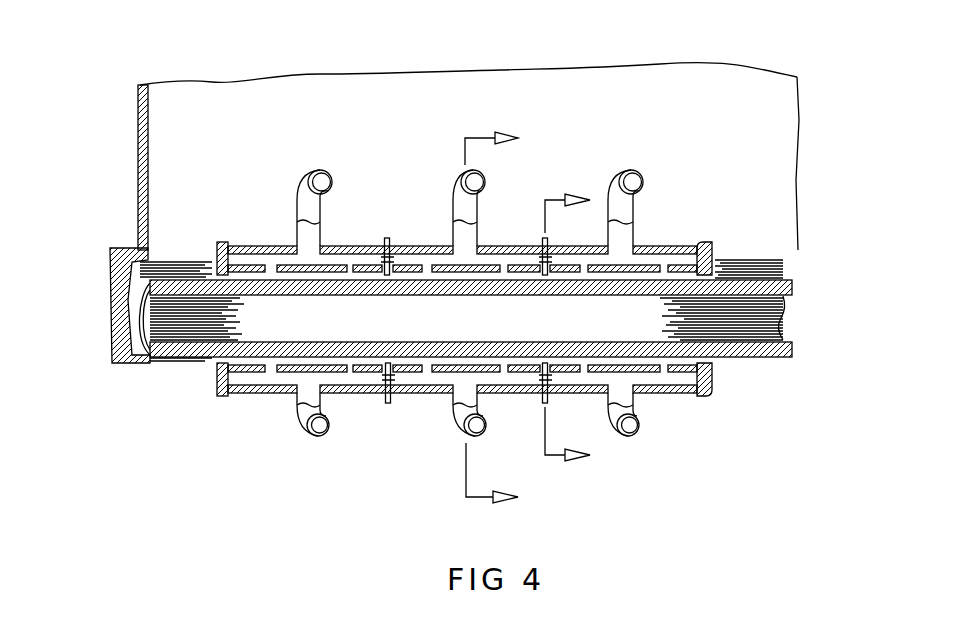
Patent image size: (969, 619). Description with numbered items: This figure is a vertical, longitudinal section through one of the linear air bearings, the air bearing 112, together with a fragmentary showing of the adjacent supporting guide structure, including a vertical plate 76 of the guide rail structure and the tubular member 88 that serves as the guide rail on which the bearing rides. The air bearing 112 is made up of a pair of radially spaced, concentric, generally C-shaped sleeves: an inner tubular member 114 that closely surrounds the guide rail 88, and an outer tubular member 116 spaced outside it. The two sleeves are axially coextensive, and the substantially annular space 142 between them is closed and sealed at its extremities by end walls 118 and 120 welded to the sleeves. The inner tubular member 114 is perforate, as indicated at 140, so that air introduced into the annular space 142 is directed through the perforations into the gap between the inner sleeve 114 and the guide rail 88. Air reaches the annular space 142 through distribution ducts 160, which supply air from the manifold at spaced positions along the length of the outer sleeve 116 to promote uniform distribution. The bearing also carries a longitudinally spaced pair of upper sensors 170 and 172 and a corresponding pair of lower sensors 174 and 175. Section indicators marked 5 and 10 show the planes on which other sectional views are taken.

The vertical plate 76 is at (212, 82).
The tubular member 88 is at (742, 358).
The linear air bearing 112 is at (501, 202).
The inner tubular member 114 is at (680, 268).
The outer tubular member 116 is at (647, 256).
The end wall 118 is at (212, 258).
The end wall 120 is at (707, 243).
The perforations 140 is at (350, 367).
The annular space 142 is at (413, 253).
The distribution duct 160 is at (318, 172).
The upper sensor 170 is at (385, 238).
The upper sensor 172 is at (540, 238).
The lower sensor 174 is at (388, 402).
The lower sensor 175 is at (544, 402).
The section line 5- 5 is at (491, 320).
The section line 10- 10 is at (570, 329).